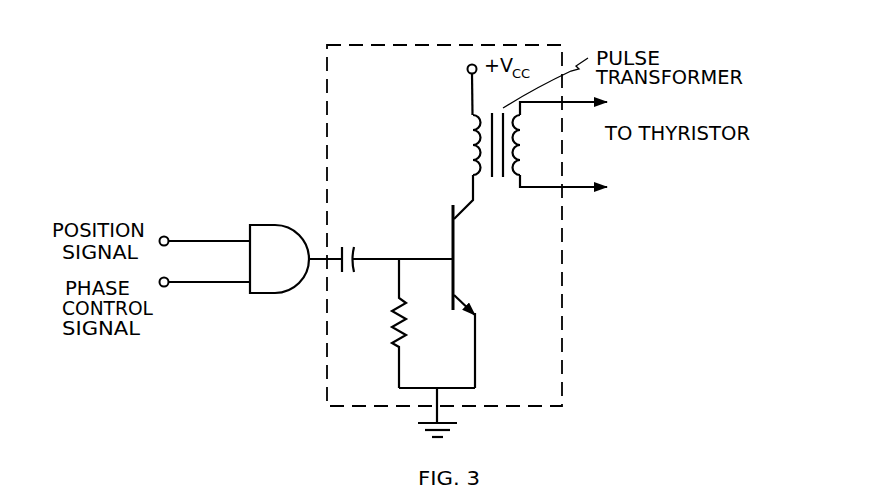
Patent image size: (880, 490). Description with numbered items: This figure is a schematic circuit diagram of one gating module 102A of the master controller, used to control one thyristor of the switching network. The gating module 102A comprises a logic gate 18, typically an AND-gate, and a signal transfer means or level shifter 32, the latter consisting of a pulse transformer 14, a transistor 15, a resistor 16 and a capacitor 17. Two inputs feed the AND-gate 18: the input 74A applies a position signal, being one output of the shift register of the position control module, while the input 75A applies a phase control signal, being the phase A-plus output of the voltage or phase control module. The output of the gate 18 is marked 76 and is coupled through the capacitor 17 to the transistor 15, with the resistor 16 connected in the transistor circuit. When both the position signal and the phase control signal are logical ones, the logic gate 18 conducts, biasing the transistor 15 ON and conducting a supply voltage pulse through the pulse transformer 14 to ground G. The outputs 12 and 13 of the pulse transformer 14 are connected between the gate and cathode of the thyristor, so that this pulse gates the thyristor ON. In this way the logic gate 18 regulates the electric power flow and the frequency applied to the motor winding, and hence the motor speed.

The input 74A is at (210, 238).
The input 75A is at (210, 283).
The logic gate 18 is at (285, 240).
The output of the gate 76 is at (320, 268).
The capacitor 17 is at (357, 250).
The transistor 15 is at (450, 212).
The resistor 16 is at (408, 341).
The pulse transformer 14 is at (510, 183).
The output 12 is at (553, 105).
The output 13 is at (550, 190).
The level shifter 32 is at (547, 44).
The gating module 102A is at (428, 209).
The ground G is at (453, 432).